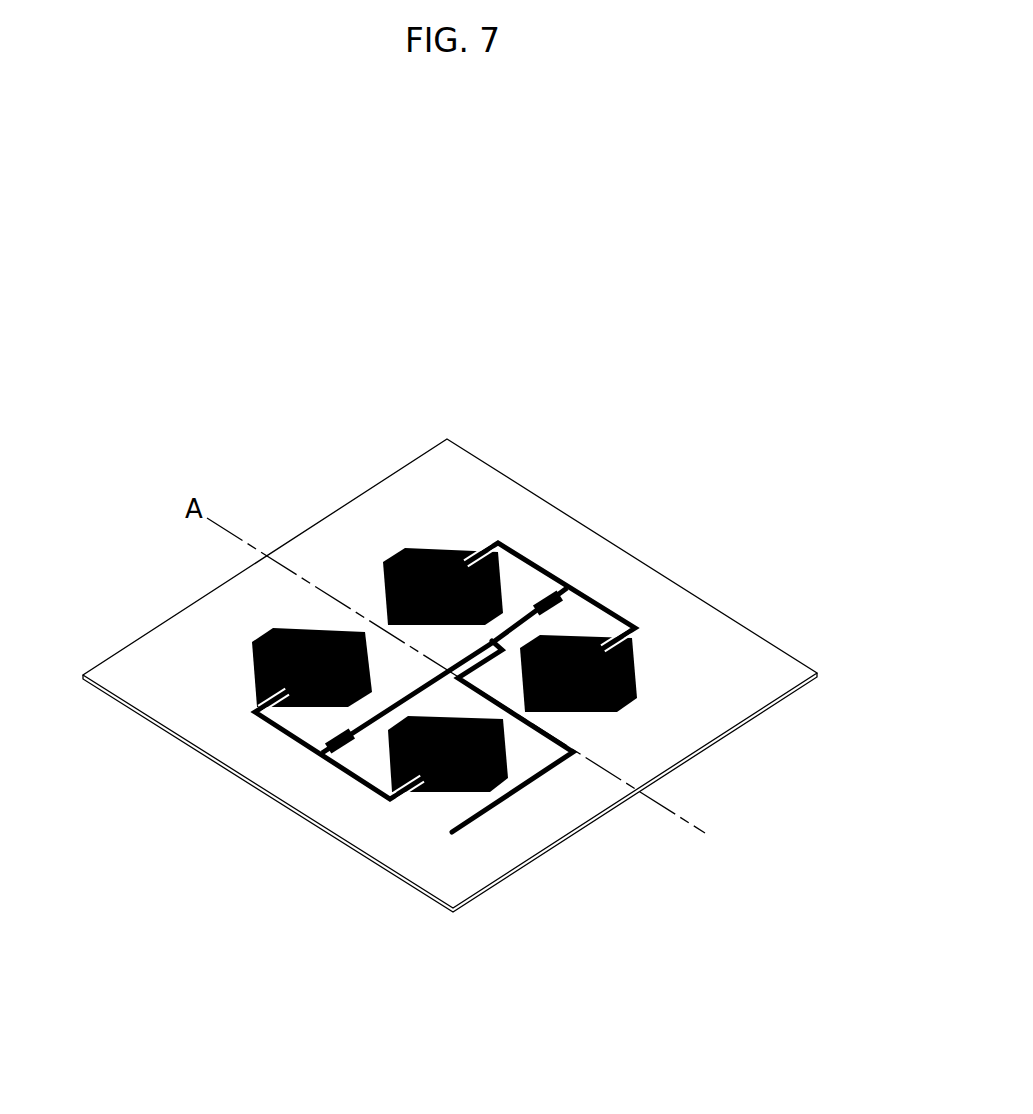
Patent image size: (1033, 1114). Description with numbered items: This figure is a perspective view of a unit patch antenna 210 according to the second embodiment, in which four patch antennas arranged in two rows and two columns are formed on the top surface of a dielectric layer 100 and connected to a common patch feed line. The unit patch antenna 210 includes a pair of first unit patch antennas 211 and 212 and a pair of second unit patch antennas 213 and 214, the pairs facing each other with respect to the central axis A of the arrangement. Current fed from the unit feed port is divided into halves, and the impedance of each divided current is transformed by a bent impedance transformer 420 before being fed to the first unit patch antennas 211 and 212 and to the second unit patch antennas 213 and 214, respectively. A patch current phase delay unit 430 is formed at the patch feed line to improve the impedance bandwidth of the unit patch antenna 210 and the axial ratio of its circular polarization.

The dielectric layer 100 is at (555, 830).
The unit patch antenna 210 is at (480, 336).
The first unit patch antenna 211 is at (443, 550).
The first unit patch antenna 212 is at (637, 665).
The second unit patch antenna 213 is at (442, 790).
The second unit patch antenna 214 is at (253, 673).
The bent impedance transformer 420 is at (539, 590).
The patch current phase delay unit 430 is at (372, 720).